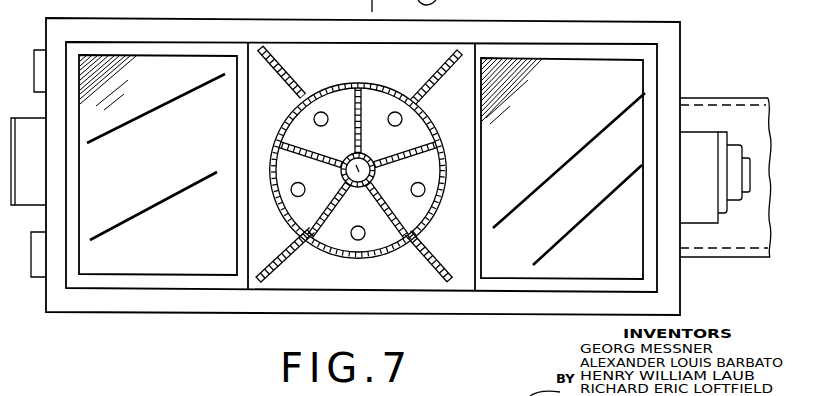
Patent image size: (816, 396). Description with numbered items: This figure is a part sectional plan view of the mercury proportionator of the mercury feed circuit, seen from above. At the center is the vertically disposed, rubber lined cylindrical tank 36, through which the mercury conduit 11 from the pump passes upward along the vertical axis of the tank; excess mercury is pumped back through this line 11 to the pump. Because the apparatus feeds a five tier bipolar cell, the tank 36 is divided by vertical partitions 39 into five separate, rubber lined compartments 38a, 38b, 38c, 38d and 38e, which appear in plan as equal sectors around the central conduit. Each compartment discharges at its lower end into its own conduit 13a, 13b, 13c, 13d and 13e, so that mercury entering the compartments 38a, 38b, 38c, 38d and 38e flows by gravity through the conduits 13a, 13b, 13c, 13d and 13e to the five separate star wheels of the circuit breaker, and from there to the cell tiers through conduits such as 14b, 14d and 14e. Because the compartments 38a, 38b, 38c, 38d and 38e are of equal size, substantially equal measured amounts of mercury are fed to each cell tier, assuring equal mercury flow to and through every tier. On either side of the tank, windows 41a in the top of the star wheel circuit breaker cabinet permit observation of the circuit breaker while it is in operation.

The mercury conduit 11 is at (355, 161).
The conduit 13a is at (323, 111).
The conduit 13b is at (396, 112).
The conduit 13c is at (425, 190).
The conduit 13d is at (352, 240).
The conduit 13e is at (293, 194).
The conduit 14b is at (302, 3).
The conduit 14d is at (528, 3).
The conduit 14e is at (643, 3).
The cylindrical tank 36 is at (424, 237).
The compartment 38a is at (300, 204).
The compartment 38b is at (306, 130).
The compartment 38c is at (414, 126).
The compartment 38d is at (414, 214).
The compartment 38e is at (383, 232).
The vertical partitions 39 is at (373, 97).
The windows 41a is at (626, 86).